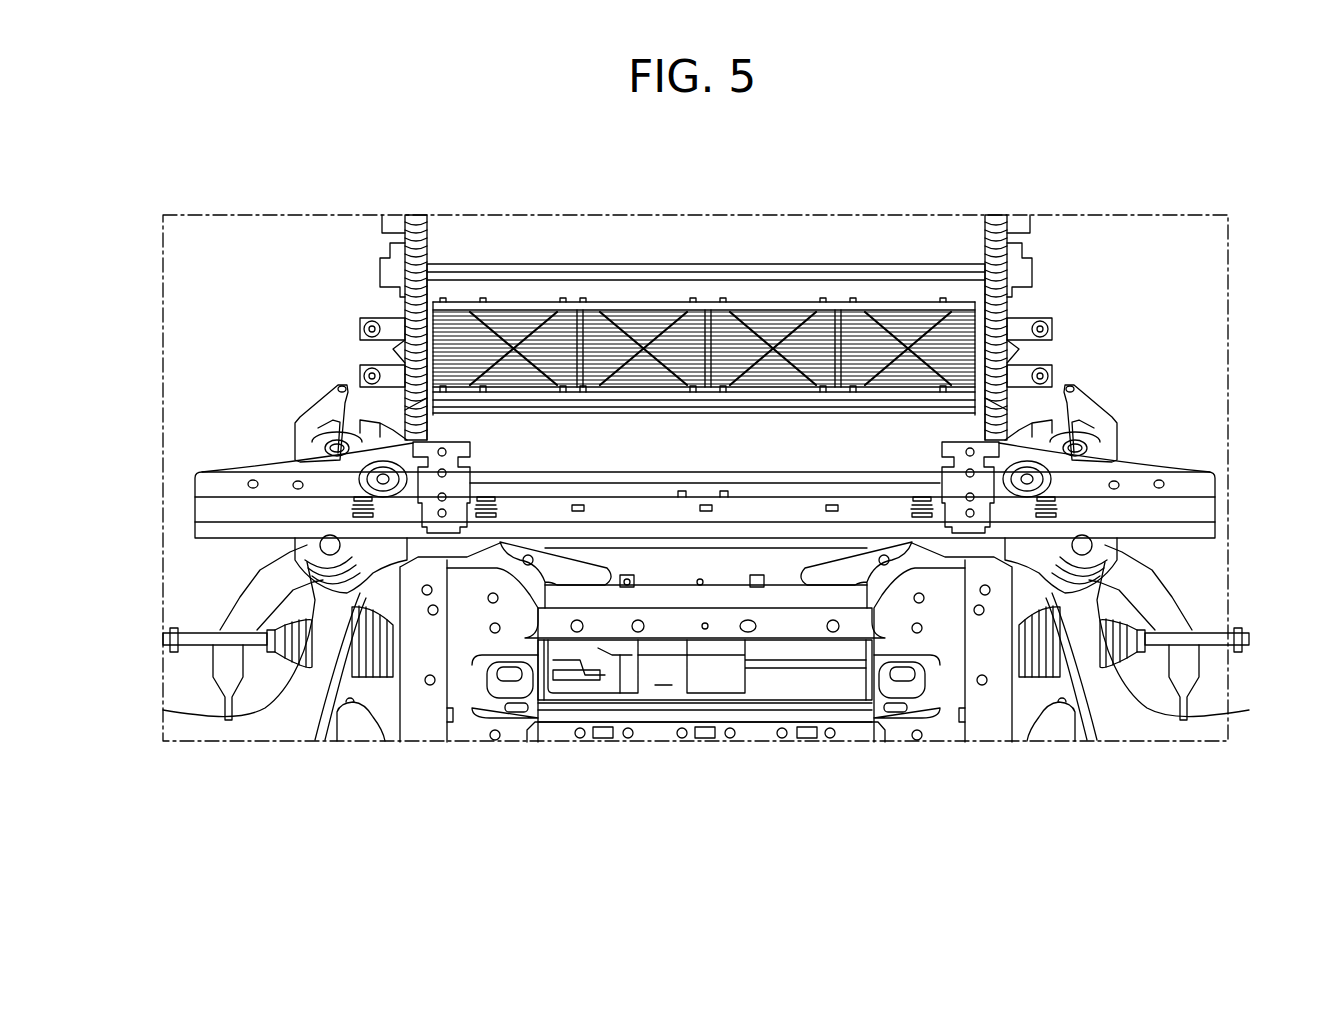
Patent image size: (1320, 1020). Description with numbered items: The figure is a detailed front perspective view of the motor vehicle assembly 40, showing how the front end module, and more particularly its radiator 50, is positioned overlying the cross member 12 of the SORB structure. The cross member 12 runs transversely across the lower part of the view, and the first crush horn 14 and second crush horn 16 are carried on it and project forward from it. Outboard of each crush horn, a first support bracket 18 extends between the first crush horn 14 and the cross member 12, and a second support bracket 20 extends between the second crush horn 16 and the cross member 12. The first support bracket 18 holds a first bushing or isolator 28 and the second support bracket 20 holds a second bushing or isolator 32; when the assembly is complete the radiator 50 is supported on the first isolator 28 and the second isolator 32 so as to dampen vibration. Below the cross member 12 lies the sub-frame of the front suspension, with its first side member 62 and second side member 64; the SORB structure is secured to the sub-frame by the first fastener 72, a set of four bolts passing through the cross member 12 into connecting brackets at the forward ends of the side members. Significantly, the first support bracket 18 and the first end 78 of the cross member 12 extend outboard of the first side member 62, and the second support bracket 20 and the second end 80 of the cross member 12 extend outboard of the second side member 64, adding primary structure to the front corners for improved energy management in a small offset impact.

The motor vehicle assembly 40 is at (336, 200).
The radiator 50 is at (1000, 215).
The first crush horn 14 is at (430, 480).
The second crush horn 16 is at (972, 485).
The first support bracket 18 is at (320, 478).
The second support bracket 20 is at (1117, 475).
The first bushing or isolator 28 is at (375, 478).
The second bushing or isolator 32 is at (1043, 475).
The first fastener 72 is at (1053, 495).
The first end of the cross member 78 is at (200, 510).
The second end of the cross member 80 is at (1215, 517).
The cross member 12 is at (658, 510).
The first side member 62 is at (412, 660).
The second side member 64 is at (998, 660).